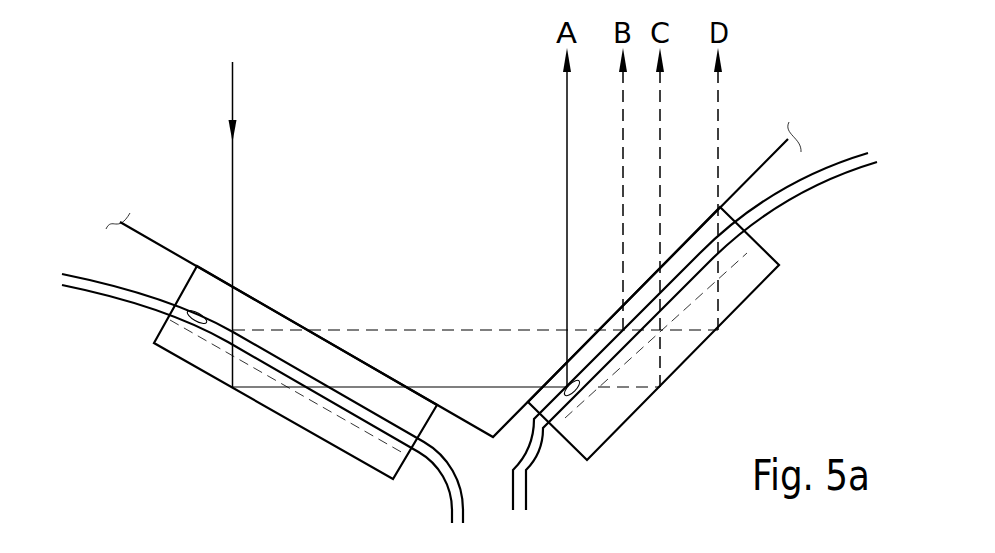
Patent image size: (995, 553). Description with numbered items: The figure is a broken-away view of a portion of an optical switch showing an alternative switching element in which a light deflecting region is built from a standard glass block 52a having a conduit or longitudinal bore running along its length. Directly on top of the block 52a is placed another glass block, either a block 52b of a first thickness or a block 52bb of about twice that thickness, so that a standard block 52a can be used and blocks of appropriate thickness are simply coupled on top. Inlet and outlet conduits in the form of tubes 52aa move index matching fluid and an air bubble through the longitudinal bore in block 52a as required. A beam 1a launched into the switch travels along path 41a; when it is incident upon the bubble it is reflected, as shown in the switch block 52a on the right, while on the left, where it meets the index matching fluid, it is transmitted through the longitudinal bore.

The incident light beam 1a is at (233, 105).
The light path in matrix element 41a is at (477, 298).
The glass block 52a is at (183, 285).
The glass block of first dimension 52b is at (367, 452).
The tubes 52aa is at (445, 488).
The glass block of dimension 2d 52bb is at (600, 430).